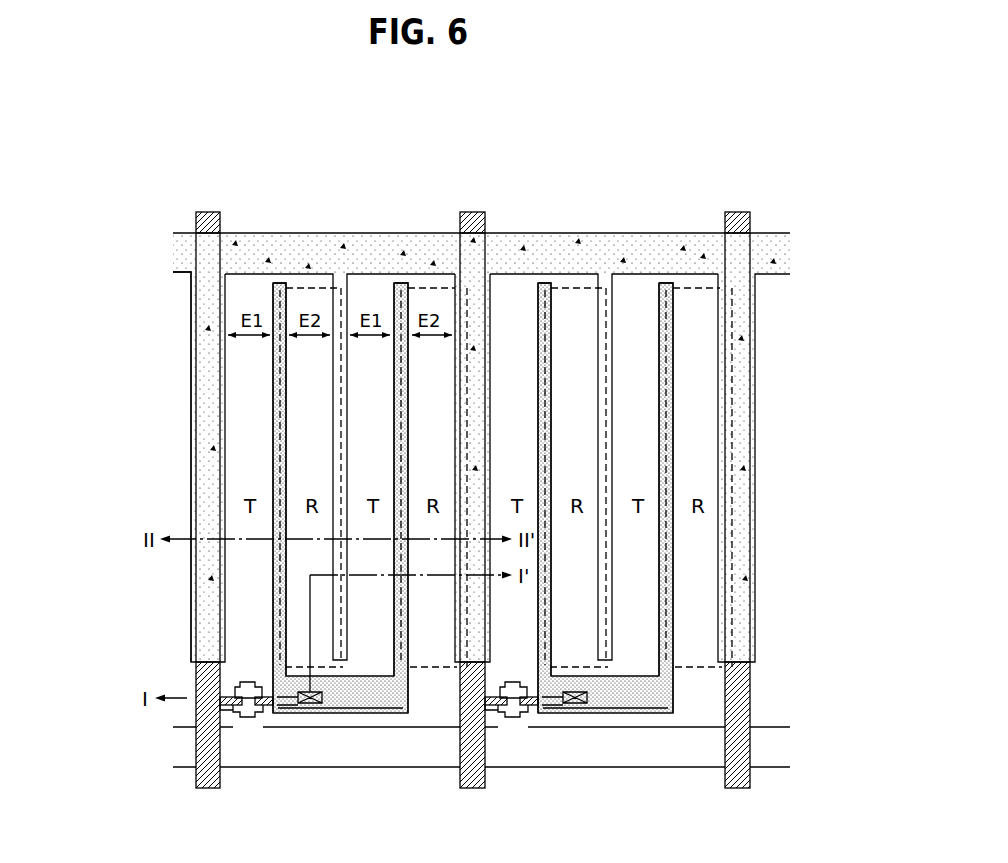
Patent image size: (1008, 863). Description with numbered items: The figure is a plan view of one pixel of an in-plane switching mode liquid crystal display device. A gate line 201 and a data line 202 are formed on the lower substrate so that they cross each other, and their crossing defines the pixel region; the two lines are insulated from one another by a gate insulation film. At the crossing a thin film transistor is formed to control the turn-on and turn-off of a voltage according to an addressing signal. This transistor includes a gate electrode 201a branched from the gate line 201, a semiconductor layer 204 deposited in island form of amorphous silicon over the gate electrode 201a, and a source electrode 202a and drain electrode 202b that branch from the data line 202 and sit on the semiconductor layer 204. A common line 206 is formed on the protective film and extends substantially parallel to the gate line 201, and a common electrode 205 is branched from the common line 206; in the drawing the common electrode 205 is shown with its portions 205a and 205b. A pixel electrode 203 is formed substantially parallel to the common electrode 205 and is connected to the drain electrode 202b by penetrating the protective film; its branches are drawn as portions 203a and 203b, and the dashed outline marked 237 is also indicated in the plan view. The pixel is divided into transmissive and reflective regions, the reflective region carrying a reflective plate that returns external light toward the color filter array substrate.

The gate line 201 is at (388, 748).
The gate electrode 201a is at (246, 682).
The data line 202 is at (203, 743).
The source electrode 202a is at (240, 706).
The drain electrode 202b is at (263, 710).
The pixel electrode 203 is at (345, 498).
The first pixel electrode finger 203a is at (277, 457).
The second pixel electrode finger 203b is at (398, 412).
The semiconductor layer 204 is at (247, 718).
The common electrode 205 is at (381, 469).
The common line 205a is at (200, 353).
The common electrode finger 205b is at (345, 383).
The common line 206 is at (250, 250).
The reflective electrode boundary 237 is at (427, 288).